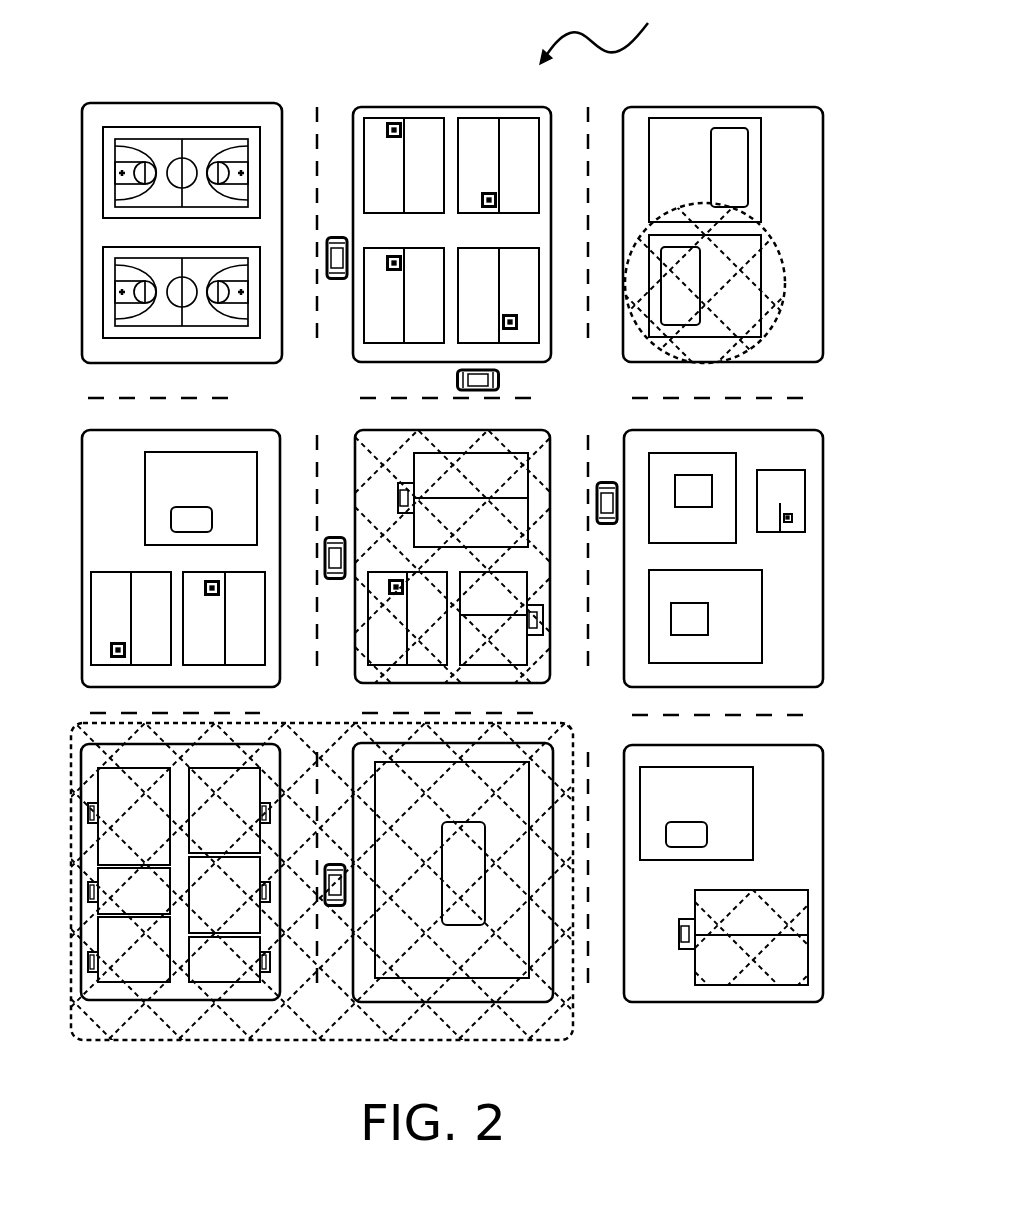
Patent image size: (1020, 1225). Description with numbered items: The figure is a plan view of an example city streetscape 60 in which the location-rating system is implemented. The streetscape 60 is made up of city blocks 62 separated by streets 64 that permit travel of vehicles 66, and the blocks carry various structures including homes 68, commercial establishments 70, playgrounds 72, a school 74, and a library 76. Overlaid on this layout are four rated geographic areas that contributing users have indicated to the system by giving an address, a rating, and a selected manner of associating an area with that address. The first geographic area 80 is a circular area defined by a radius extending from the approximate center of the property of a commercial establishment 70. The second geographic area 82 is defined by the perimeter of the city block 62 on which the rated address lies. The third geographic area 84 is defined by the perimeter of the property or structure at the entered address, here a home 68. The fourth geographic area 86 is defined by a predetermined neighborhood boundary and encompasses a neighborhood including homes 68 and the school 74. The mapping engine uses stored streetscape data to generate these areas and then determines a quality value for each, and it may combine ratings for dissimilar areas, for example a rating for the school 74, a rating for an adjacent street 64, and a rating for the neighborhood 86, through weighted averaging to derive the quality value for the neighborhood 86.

The city streetscape 60 is at (608, 33).
The city block 62 is at (169, 243).
The street 64 is at (697, 391).
The vehicle 66 is at (500, 387).
The home 68 is at (410, 176).
The commercial establishment 70 is at (722, 314).
The playground 72 is at (155, 200).
The school 74 is at (412, 956).
The library 76 is at (719, 626).
The first geographic area 80 is at (627, 270).
The second geographic area 82 is at (354, 430).
The third geographic area 84 is at (783, 968).
The fourth geographic area 86 is at (268, 1008).